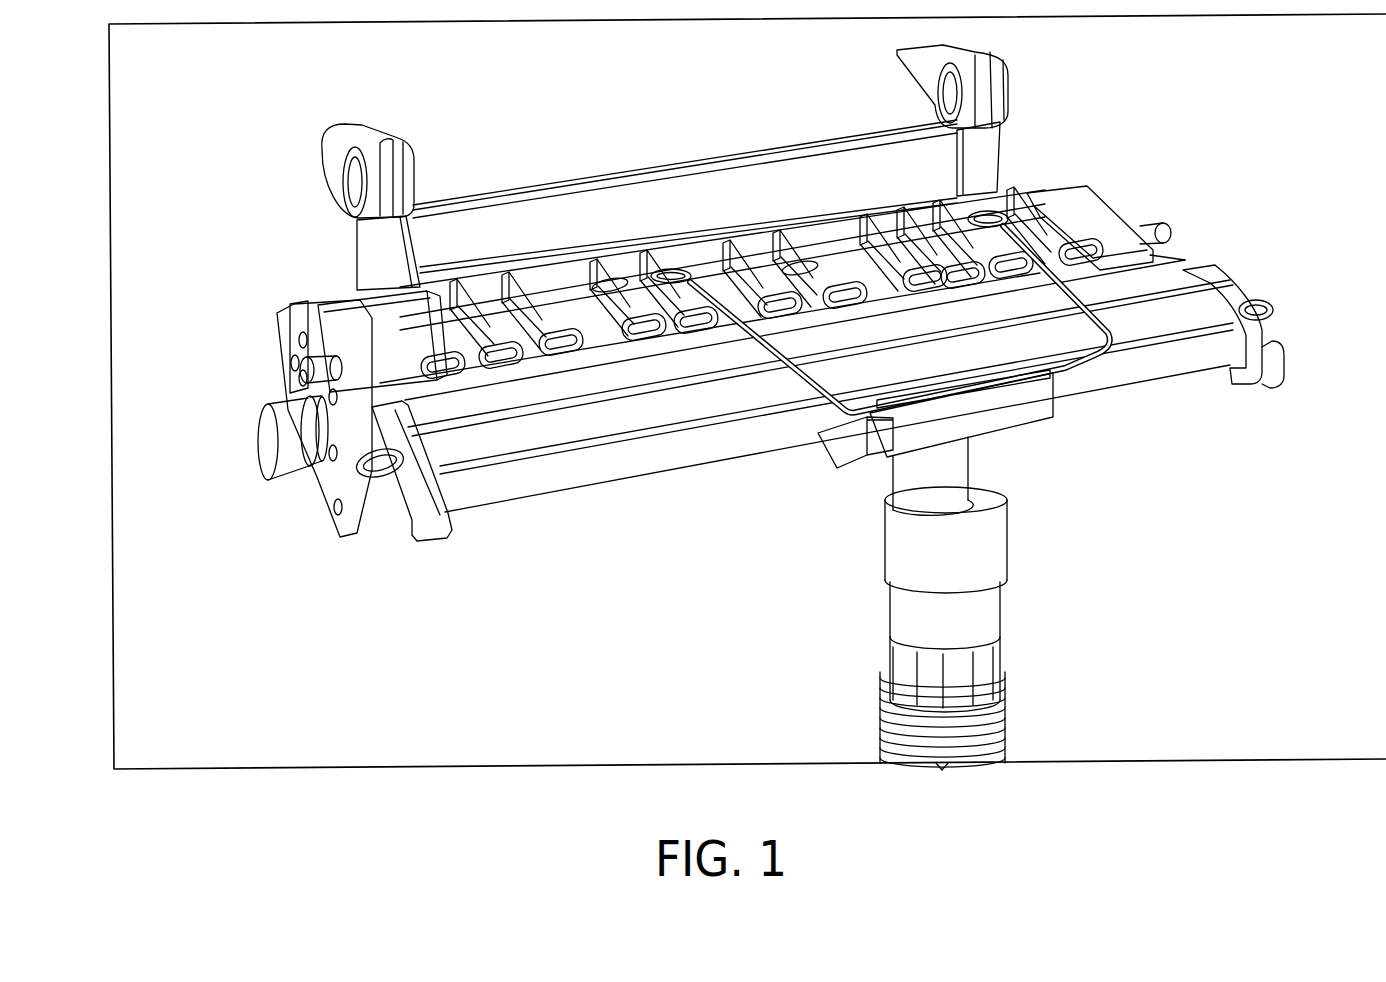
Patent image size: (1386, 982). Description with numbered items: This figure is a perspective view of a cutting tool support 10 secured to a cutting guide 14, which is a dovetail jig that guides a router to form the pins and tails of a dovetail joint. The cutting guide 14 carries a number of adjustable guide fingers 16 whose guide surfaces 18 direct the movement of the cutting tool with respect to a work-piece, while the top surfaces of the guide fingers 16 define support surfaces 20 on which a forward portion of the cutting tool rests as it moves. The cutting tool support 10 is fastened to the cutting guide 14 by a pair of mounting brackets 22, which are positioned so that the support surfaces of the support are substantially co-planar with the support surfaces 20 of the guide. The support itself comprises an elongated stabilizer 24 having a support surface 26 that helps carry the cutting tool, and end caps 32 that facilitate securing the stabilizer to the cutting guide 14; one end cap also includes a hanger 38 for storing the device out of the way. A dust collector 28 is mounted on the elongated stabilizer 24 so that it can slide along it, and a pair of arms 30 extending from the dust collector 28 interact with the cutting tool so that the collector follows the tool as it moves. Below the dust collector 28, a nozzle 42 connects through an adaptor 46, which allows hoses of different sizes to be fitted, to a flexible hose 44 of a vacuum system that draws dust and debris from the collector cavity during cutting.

The cutting tool support 10 is at (580, 491).
The cutting guide 14 is at (1057, 165).
The guide fingers 16 is at (608, 268).
The guide surfaces 18 is at (545, 335).
The support surfaces 20 is at (665, 300).
The mounting brackets 22 is at (433, 542).
The elongated stabilizer 24 is at (1183, 368).
The support surface 26 is at (622, 372).
The dust collector 28 is at (845, 460).
The arms 30 is at (815, 420).
The end caps 32 is at (290, 468).
The hanger 38 is at (388, 492).
The nozzle 42 is at (940, 470).
The flexible hose 44 is at (990, 718).
The adaptor 46 is at (957, 568).